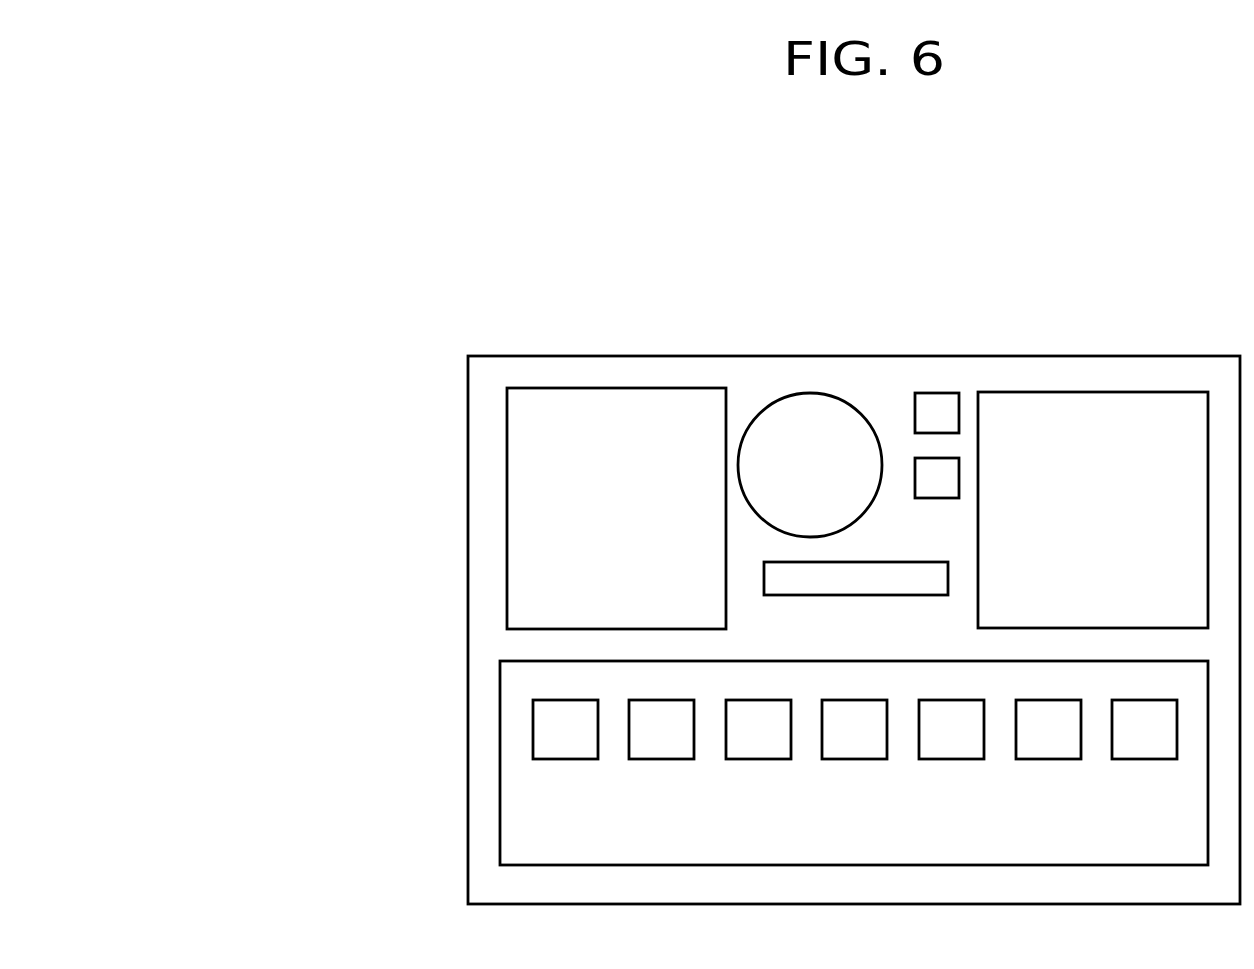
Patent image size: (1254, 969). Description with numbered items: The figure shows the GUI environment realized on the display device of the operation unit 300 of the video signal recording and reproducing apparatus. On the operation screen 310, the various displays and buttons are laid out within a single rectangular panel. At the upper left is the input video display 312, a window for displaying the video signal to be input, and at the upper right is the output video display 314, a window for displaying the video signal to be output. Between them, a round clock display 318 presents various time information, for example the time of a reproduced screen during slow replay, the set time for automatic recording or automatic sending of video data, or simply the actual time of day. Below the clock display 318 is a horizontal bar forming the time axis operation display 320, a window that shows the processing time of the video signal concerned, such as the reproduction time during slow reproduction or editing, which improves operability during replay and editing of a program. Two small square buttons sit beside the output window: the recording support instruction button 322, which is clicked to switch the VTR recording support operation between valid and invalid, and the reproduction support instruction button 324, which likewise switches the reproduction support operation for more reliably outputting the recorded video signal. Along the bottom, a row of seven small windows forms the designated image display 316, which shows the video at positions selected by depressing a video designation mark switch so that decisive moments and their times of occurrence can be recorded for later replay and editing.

The operation unit 300 is at (248, 621).
The operation screen 310 is at (468, 433).
The input video display 312 is at (623, 387).
The output video display 314 is at (1106, 391).
The designated image display 316 is at (532, 740).
The clock display 318 is at (811, 393).
The time axis operation display 320 is at (948, 578).
The recording support instruction button 322 is at (939, 392).
The reproduction support instruction button 324 is at (959, 478).